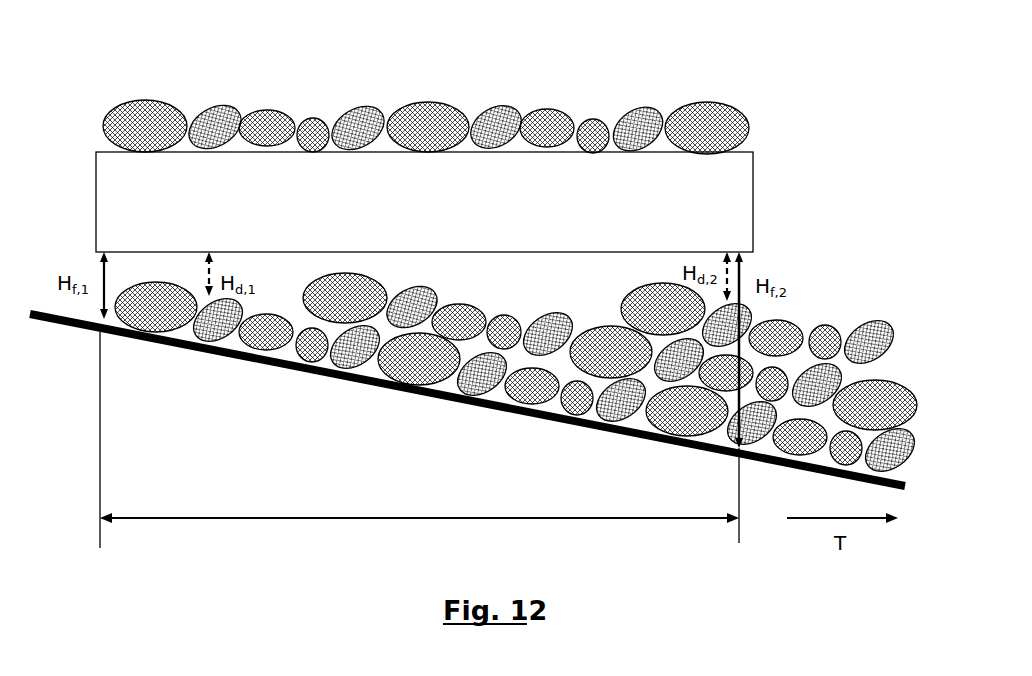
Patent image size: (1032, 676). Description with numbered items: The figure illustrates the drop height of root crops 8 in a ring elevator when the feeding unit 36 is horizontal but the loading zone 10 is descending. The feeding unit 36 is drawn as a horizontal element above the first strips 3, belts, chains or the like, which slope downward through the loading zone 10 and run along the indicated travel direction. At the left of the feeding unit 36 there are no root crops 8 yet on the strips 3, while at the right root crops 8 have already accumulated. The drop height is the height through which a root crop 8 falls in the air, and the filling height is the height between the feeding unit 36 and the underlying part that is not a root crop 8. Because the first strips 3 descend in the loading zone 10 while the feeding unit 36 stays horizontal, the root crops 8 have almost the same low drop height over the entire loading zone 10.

The root crops 8 is at (642, 112).
The feeding unit 36 is at (739, 202).
The first pair of endless carrying strips 3 is at (195, 350).
The loading zone 10 is at (419, 505).